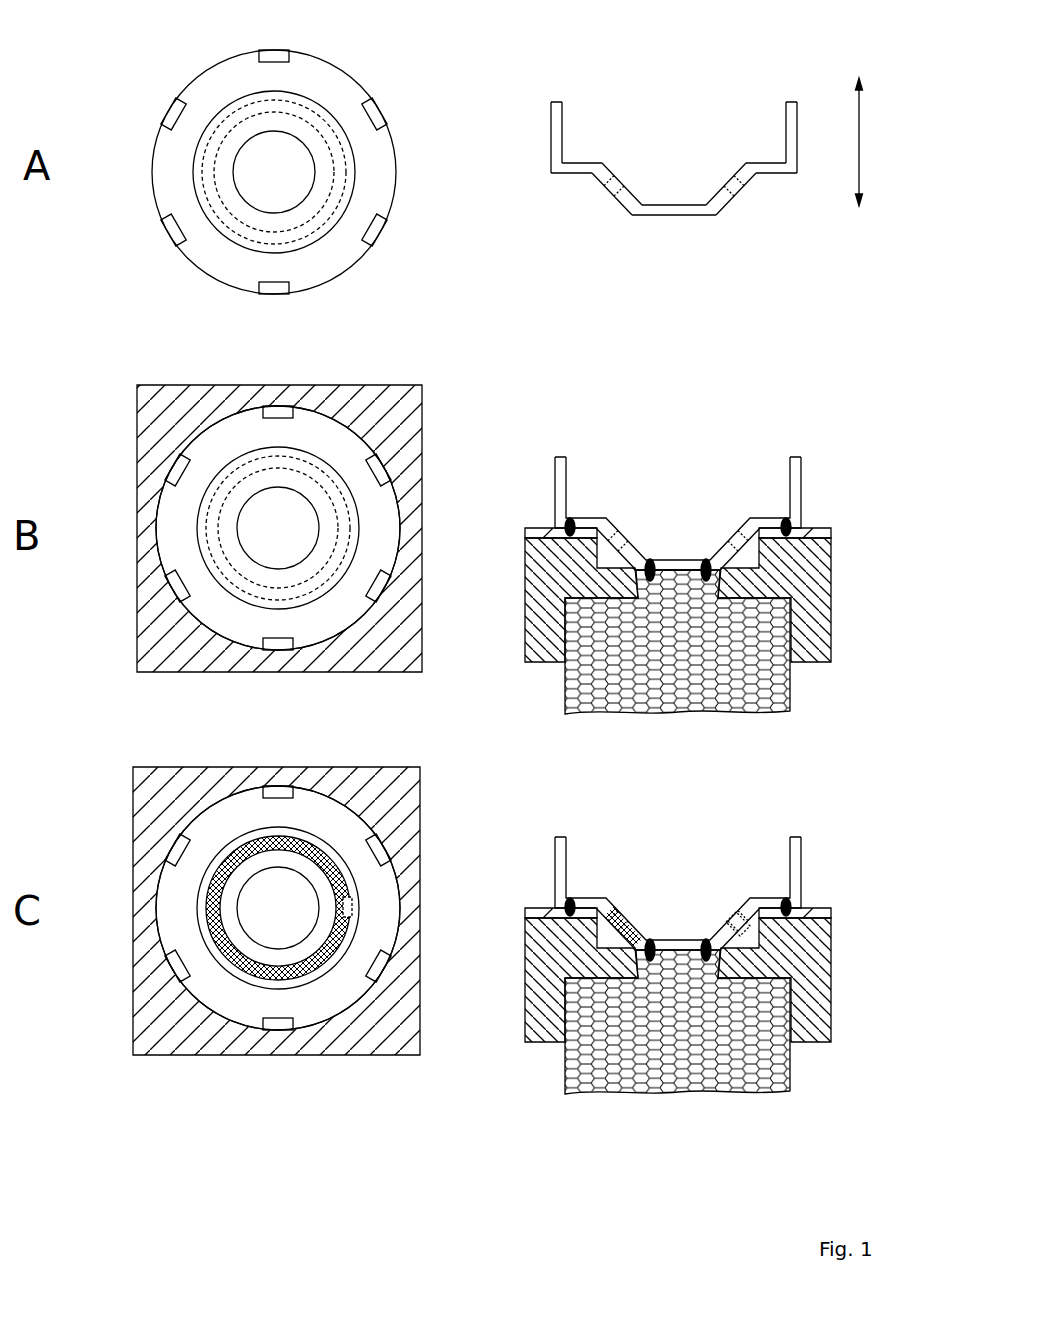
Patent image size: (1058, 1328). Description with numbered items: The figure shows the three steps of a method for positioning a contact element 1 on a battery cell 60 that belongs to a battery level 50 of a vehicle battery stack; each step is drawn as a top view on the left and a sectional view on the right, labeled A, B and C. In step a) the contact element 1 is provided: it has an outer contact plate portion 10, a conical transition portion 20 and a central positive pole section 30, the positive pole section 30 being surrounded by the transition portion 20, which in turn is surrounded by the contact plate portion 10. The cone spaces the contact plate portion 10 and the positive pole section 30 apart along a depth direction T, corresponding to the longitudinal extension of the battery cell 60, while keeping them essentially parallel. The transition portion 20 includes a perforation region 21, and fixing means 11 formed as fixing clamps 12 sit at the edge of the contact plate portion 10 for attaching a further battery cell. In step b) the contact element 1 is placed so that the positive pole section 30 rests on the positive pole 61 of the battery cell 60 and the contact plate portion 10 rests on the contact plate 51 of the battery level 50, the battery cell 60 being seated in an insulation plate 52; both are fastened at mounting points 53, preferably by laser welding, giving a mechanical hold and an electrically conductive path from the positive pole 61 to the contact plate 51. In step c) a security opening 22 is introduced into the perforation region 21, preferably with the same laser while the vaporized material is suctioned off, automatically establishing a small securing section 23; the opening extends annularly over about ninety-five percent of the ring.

The contact element 1 is at (434, 515).
The contact plate portion 10 is at (205, 97).
The fixing means 11 is at (432, 174).
The fixing clamps 12 is at (275, 53).
The transition portion 20 is at (193, 165).
The perforation region 21 is at (205, 172).
The security opening 22 is at (207, 920).
The securing section 23 is at (347, 910).
The positive pole section 30 is at (297, 173).
The battery level 50 is at (494, 754).
The contact plate 51 is at (140, 442).
The insulation plate 52 is at (532, 628).
The mounting points 53 is at (572, 520).
The battery cell 60 is at (783, 685).
The positive pole 61 is at (688, 568).
The depth direction T is at (858, 97).